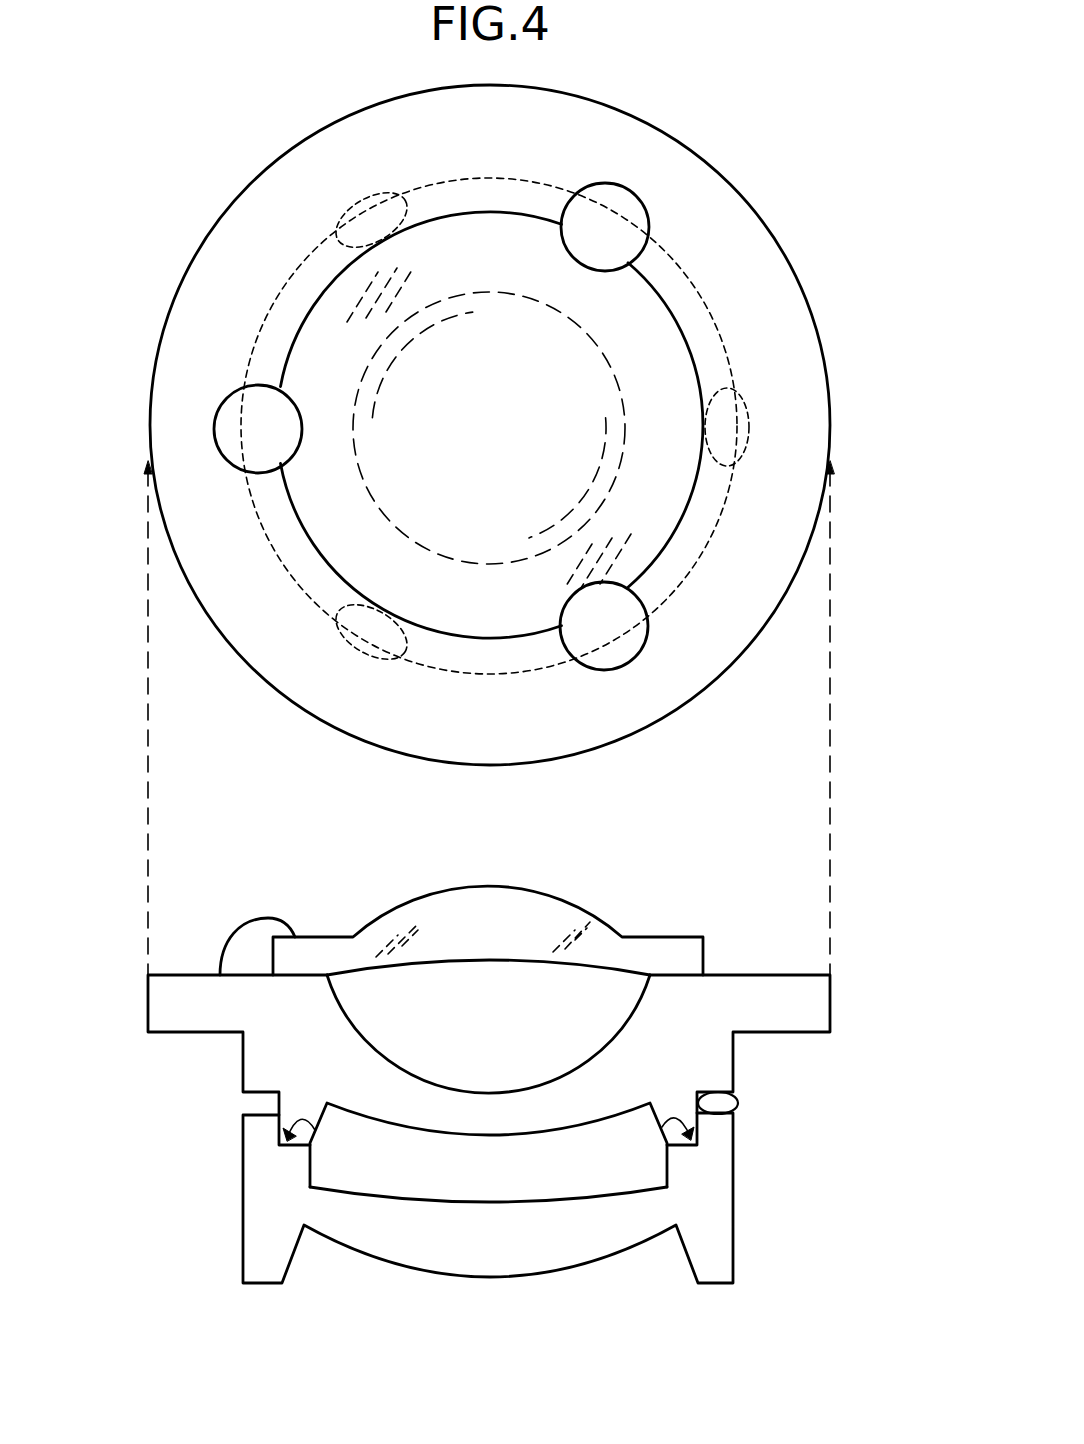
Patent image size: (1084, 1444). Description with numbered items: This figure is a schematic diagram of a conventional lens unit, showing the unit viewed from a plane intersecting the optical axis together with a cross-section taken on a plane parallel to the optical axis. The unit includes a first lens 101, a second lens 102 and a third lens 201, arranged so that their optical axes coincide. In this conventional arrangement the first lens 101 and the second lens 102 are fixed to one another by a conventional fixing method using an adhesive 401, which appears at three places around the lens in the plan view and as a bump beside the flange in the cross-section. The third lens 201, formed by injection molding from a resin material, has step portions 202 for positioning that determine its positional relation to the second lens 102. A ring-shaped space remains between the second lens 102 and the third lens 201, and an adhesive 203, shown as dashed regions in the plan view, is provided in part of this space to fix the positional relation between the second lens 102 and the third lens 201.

The first lens 101 is at (647, 302).
The second lens 102 is at (788, 304).
The third lens 201 is at (718, 1183).
The step portions 202 is at (317, 1130).
The adhesive 203 is at (362, 205).
The adhesive 401 is at (615, 200).